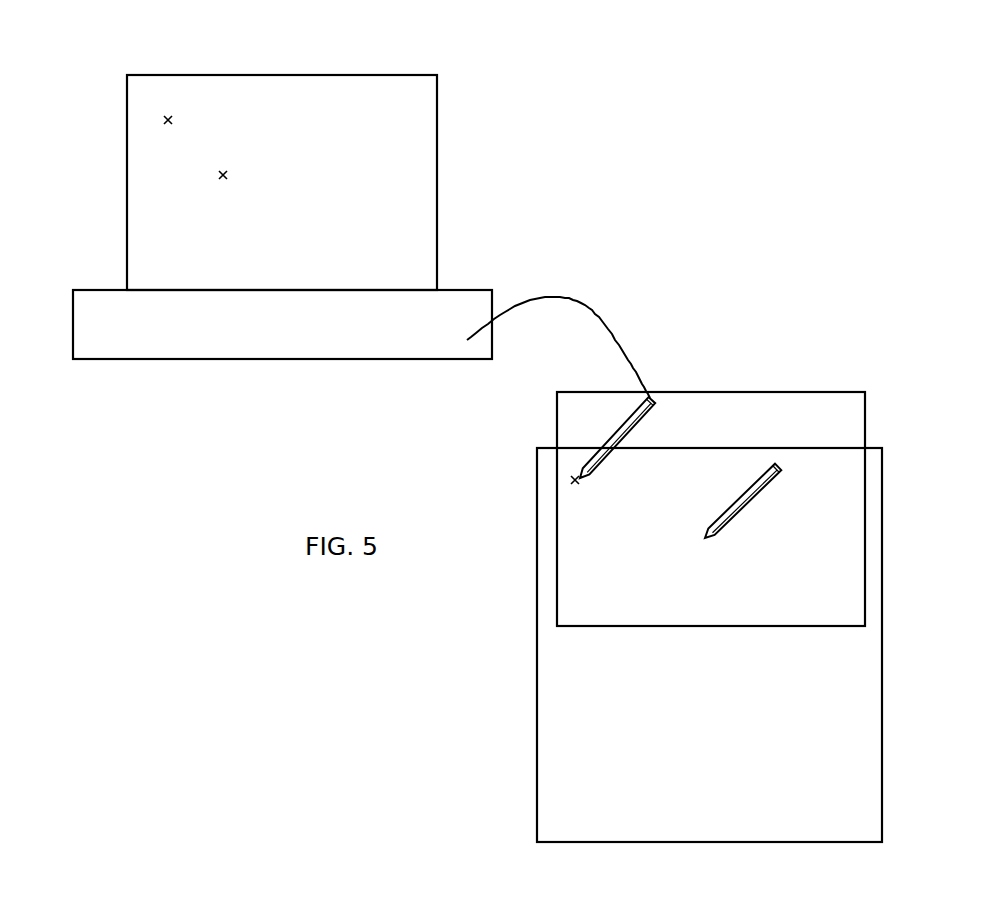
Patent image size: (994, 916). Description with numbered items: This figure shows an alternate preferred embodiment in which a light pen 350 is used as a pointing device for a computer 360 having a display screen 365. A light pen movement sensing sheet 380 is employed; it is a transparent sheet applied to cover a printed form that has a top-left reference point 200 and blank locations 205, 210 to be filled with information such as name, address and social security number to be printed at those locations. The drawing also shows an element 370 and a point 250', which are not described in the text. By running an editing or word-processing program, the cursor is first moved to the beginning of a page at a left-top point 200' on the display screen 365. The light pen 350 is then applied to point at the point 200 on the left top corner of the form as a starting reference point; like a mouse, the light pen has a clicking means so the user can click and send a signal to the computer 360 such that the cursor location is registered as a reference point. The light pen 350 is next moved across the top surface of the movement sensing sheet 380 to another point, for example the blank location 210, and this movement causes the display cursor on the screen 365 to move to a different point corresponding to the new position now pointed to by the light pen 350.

The left-top point 200' is at (199, 77).
The displayed handwritten mark 250' is at (255, 107).
The display screen 365 is at (420, 183).
The computer 360 is at (457, 295).
The light pen movement sensing sheet 380 is at (852, 408).
The digitizing tablet 370 is at (583, 465).
The light pen 350 is at (647, 417).
The top-left reference point 200 is at (513, 495).
The blank location 205 is at (675, 490).
The blank location 210 is at (703, 547).